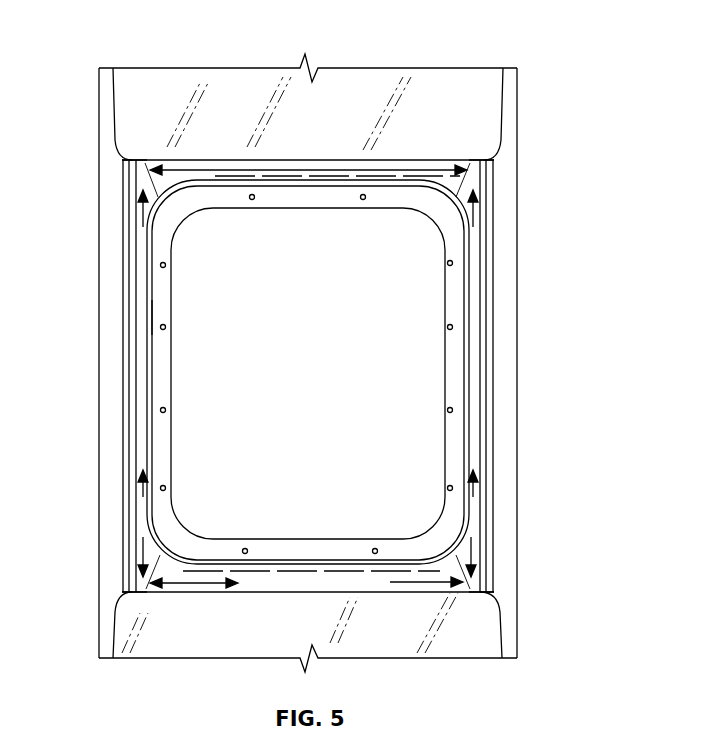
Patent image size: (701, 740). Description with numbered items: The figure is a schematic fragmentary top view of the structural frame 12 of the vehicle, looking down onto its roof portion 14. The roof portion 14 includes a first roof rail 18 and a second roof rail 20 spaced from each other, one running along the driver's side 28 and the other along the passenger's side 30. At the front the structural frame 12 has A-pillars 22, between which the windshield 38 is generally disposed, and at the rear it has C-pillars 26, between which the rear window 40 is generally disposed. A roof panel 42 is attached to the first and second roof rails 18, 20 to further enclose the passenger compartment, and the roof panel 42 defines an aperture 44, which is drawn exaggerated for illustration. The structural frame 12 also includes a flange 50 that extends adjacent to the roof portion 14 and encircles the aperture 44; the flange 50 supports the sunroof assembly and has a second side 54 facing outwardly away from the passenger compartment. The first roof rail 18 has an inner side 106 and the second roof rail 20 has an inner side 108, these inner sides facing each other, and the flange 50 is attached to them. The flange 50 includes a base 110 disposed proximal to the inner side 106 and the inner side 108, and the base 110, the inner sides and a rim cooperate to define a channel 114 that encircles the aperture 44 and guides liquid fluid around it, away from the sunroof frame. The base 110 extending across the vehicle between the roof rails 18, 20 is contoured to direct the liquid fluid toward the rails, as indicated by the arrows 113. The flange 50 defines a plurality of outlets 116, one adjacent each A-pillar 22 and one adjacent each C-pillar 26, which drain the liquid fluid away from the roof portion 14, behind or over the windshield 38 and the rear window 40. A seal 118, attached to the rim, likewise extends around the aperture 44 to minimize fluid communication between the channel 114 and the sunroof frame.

The structural frame 12 is at (520, 78).
The roof portion 14 is at (528, 323).
The first roof rail 18 is at (110, 218).
The second roof rail 20 is at (505, 463).
The A-pillars 22 is at (112, 130).
The C-pillars 26 is at (108, 640).
The driver's side 28 is at (107, 133).
The passenger's side 30 is at (522, 58).
The windshield 38 is at (238, 78).
The rear window 40 is at (385, 647).
The roof panel 42 is at (483, 233).
The aperture 44 is at (482, 280).
The flange 50 is at (150, 432).
The second side 54 is at (150, 315).
The inner side 106 is at (170, 275).
The inner side 108 is at (445, 303).
The base 110 is at (140, 275).
The arrows 113 is at (150, 205).
The channel 114 is at (140, 490).
The outlets 116 is at (153, 162).
The seal 118 is at (155, 355).